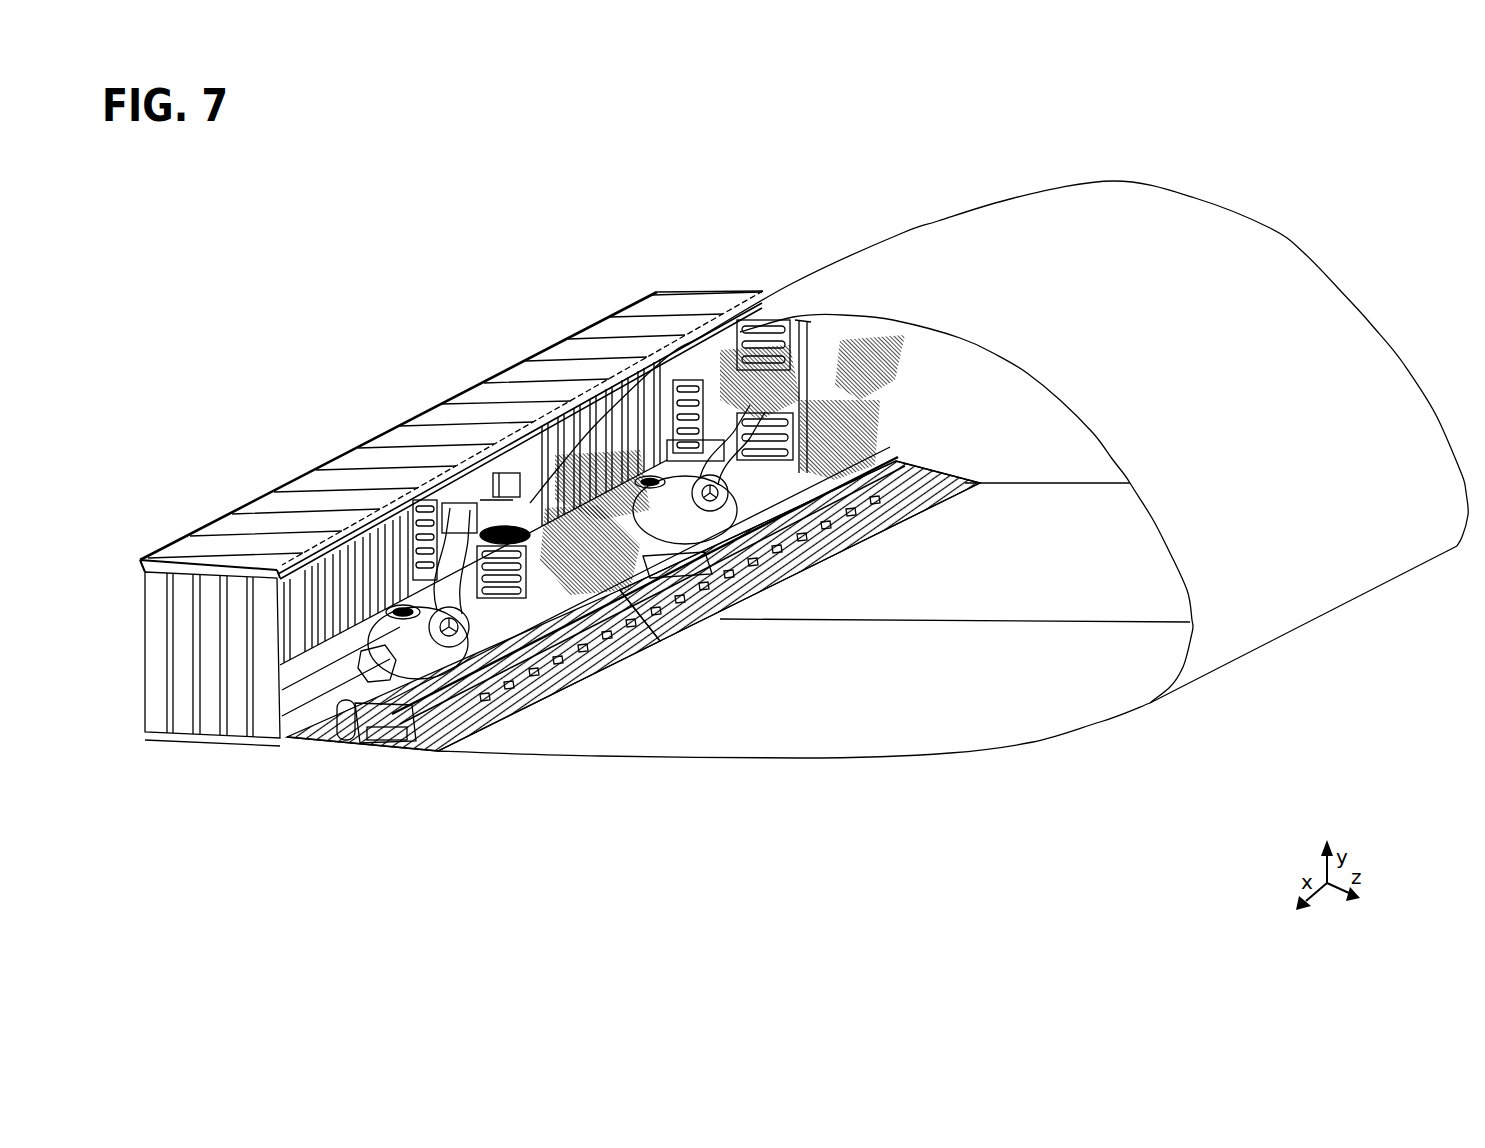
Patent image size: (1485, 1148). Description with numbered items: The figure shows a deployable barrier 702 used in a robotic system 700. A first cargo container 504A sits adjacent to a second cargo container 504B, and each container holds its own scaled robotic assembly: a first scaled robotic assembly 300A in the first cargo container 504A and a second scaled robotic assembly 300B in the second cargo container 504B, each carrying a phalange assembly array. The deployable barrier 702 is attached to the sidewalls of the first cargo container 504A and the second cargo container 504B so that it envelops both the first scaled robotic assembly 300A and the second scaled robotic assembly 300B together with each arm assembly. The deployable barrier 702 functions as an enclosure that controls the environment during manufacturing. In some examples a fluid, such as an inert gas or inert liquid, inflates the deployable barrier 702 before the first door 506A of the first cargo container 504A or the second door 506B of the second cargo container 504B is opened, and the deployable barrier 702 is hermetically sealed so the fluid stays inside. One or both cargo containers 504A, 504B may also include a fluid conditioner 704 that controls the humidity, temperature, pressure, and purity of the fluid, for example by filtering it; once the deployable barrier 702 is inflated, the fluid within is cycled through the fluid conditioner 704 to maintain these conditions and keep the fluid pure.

The robotic system 700 is at (256, 279).
The deployable barrier 702 is at (1037, 742).
The fluid conditioner 704 is at (495, 486).
The first cargo container 504A is at (242, 511).
The second cargo container 504B is at (537, 357).
The first door 506A is at (562, 687).
The second door 506B is at (843, 543).
The first scaled robotic assembly 300A is at (270, 728).
The second scaled robotic assembly 300B is at (702, 566).